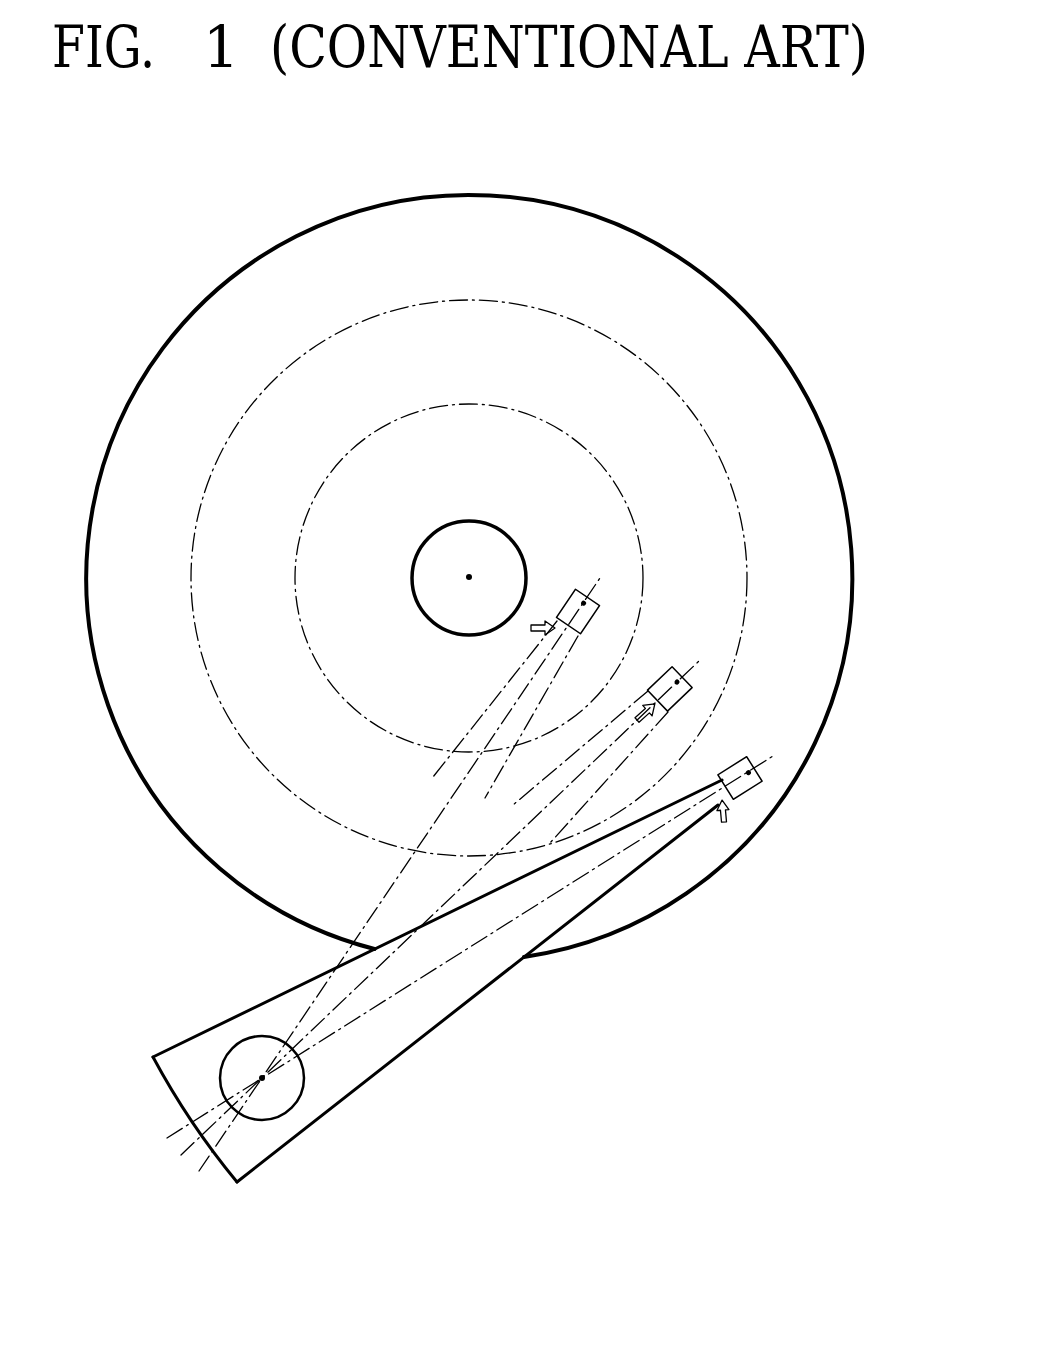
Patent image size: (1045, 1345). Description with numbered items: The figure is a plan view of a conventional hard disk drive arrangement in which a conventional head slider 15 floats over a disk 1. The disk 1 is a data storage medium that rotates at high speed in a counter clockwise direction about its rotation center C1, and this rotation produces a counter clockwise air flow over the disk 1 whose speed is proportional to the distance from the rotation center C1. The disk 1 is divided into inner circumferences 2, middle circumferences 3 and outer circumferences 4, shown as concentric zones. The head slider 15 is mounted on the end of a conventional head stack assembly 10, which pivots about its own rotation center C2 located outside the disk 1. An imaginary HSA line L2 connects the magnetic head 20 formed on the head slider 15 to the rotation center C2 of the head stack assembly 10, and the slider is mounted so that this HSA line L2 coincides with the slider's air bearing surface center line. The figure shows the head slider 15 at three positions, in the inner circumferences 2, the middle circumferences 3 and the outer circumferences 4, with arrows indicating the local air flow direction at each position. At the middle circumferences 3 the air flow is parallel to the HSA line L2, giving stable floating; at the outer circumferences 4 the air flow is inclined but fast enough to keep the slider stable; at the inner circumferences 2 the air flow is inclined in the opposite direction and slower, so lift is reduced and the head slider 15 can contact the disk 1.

The disk 1 is at (722, 290).
The inner circumferences 2 is at (397, 499).
The middle circumferences 3 is at (330, 416).
The outer circumferences 4 is at (264, 338).
The head stack assembly 10 is at (582, 913).
The head slider 15 is at (764, 806).
The magnetic head 20 is at (758, 777).
The rotation center of the disk C1 is at (469, 577).
The rotation center of the HSA C2 is at (263, 1080).
The HSA line L2 is at (410, 987).